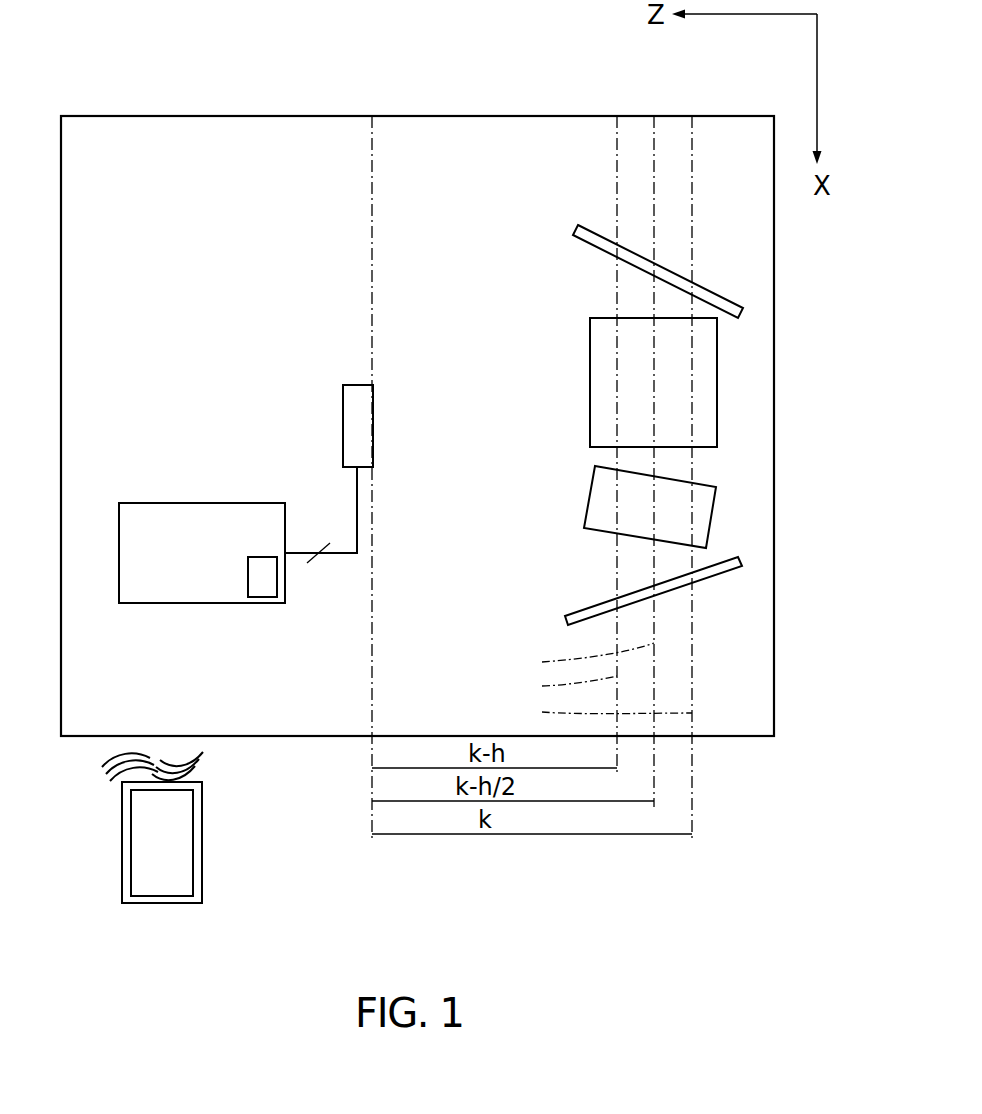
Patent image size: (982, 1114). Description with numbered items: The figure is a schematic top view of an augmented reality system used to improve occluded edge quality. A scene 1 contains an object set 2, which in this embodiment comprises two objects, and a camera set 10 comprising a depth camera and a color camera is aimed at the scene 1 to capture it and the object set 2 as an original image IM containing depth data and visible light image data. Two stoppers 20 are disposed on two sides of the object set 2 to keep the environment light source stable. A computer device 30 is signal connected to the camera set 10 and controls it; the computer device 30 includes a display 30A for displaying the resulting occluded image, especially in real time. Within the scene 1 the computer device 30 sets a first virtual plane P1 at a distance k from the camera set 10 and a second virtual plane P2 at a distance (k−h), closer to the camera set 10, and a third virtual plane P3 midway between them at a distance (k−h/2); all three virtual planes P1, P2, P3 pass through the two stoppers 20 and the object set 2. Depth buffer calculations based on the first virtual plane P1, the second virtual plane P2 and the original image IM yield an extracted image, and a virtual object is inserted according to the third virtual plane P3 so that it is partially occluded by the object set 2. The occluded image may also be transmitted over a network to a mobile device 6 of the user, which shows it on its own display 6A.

The scene 1 is at (541, 116).
The object set 2 is at (590, 390).
The camera set 10 is at (353, 433).
The stoppers 20 is at (590, 245).
The computer device 30 is at (167, 510).
The display 30A is at (263, 592).
The original image IM is at (317, 538).
The first virtual plane P1 is at (600, 712).
The second virtual plane P2 is at (563, 684).
The third virtual plane P3 is at (581, 658).
The mobile device 6 is at (200, 822).
The display 6A is at (137, 818).